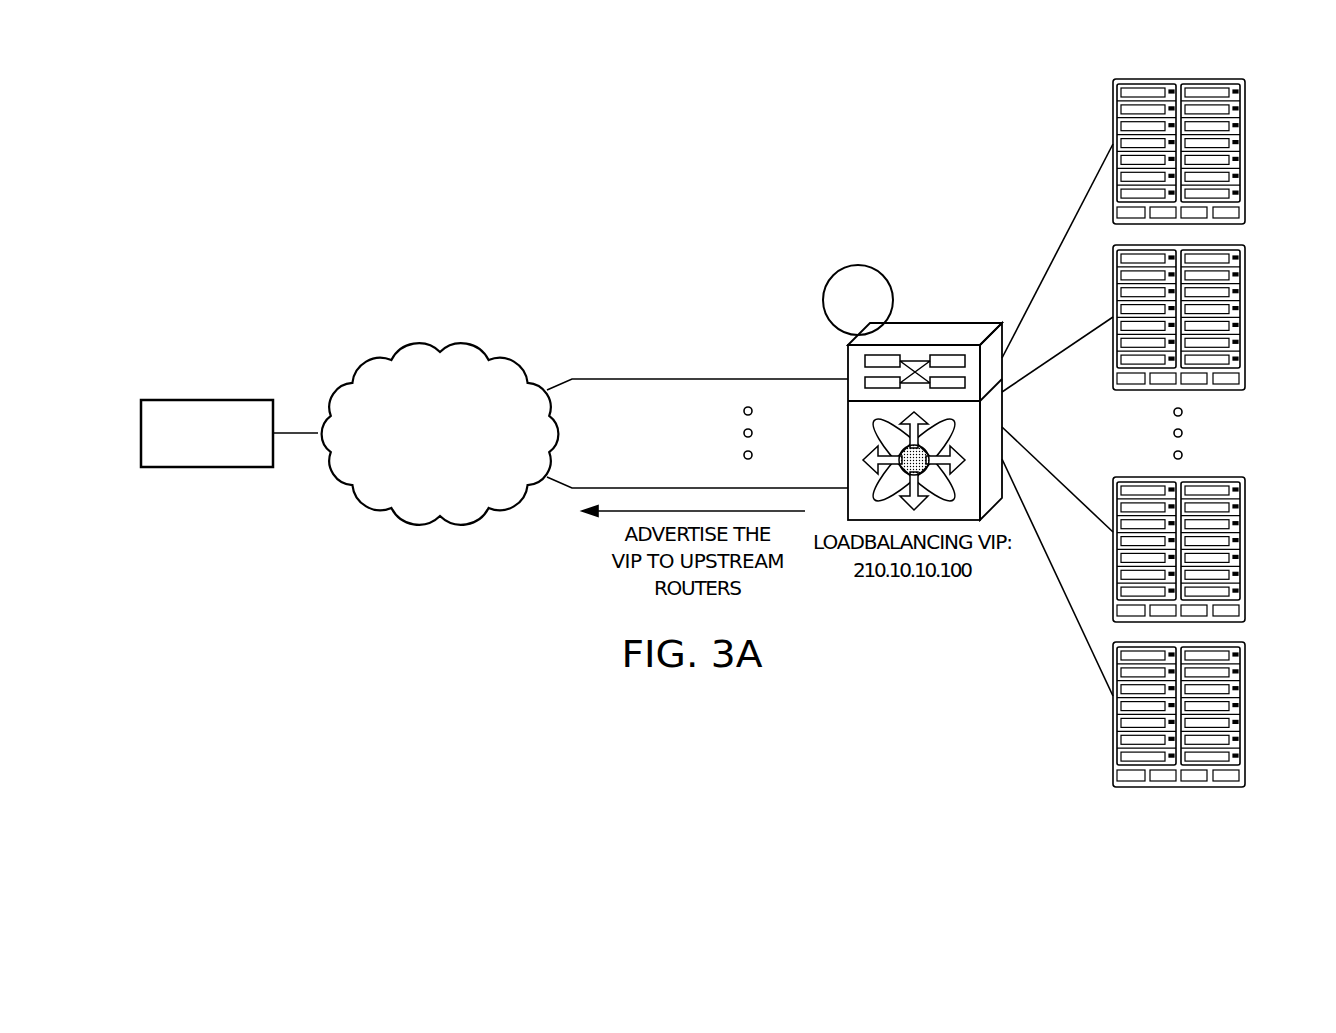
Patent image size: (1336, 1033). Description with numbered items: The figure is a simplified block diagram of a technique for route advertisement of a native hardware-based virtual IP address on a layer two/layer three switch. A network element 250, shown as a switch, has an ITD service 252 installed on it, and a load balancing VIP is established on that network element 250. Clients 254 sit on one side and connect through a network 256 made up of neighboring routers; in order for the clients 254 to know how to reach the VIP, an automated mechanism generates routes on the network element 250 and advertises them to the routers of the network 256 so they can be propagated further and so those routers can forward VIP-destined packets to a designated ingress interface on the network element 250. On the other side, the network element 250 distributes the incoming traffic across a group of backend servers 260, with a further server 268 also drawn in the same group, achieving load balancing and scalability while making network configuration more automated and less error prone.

The network element 250 is at (935, 323).
The ITD service 252 is at (858, 265).
The clients 254 is at (207, 400).
The network 256 is at (419, 448).
The backend servers 260 is at (1245, 152).
The server 268 is at (1245, 725).